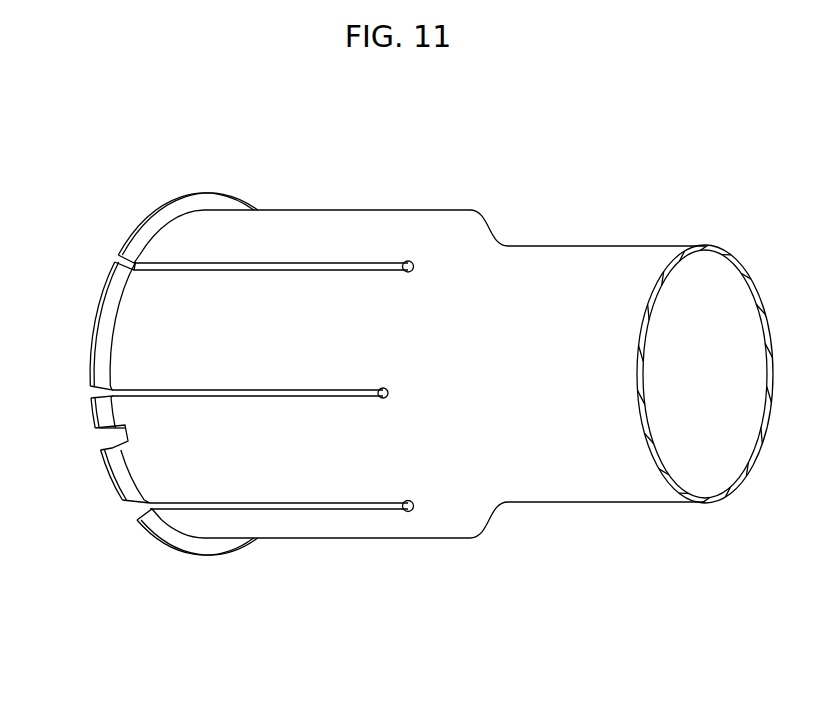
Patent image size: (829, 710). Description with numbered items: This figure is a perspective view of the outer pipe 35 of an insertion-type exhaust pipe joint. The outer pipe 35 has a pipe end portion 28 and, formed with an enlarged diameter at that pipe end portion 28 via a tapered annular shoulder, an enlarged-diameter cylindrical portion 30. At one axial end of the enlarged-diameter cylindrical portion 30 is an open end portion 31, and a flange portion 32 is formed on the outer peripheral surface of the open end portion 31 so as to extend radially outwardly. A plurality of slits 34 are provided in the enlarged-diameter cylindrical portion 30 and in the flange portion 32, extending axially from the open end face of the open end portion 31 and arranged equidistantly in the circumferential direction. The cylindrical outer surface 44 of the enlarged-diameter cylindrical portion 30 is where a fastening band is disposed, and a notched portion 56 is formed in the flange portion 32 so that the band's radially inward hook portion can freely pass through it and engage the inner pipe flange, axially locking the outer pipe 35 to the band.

The pipe end portion 28 is at (597, 262).
The enlarged-diameter cylindrical portion 30 is at (357, 222).
The open end portion 31 is at (215, 528).
The flange portion 32 is at (100, 349).
The slits 34 is at (299, 262).
The outer pipe 35 is at (466, 208).
The cylindrical outer surface 44 is at (282, 483).
The notched portion 56 is at (112, 438).